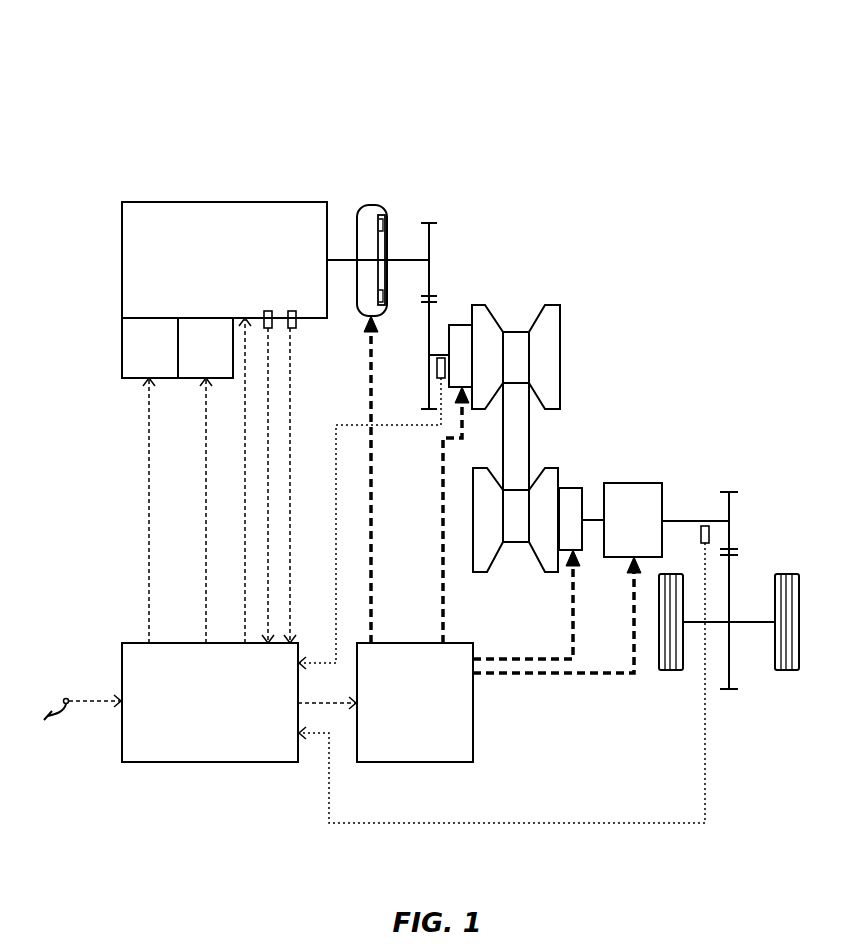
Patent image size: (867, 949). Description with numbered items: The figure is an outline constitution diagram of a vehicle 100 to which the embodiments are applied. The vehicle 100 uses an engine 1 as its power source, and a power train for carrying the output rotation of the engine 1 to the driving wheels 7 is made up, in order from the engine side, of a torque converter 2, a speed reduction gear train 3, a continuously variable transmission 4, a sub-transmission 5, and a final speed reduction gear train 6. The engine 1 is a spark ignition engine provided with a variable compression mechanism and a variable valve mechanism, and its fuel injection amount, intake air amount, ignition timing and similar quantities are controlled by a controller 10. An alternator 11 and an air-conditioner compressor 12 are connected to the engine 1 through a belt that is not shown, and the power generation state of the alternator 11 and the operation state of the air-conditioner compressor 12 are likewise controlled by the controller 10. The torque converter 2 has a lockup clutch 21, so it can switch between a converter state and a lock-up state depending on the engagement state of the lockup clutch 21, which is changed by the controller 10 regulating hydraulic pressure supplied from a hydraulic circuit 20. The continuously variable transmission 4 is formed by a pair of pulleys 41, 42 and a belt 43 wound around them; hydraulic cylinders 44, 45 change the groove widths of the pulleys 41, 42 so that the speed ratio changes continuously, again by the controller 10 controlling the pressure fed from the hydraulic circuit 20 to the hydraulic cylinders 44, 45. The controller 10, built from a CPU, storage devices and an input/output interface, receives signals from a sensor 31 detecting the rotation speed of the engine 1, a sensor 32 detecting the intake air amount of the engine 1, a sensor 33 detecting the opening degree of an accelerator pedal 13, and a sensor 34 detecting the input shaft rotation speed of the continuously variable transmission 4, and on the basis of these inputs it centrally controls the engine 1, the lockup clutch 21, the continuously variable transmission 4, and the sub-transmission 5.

The vehicle 100 is at (614, 145).
The engine 1 is at (287, 212).
The torque converter 2 is at (374, 211).
The lockup clutch 21 is at (385, 215).
The speed reduction gear train 3 is at (431, 258).
The continuously variable transmission 4 is at (592, 306).
The pulley 41 is at (549, 310).
The pulley 42 is at (551, 560).
The belt 43 is at (530, 432).
The hydraulic cylinder 44 is at (458, 324).
The hydraulic cylinder 45 is at (585, 487).
The sub-transmission 5 is at (639, 495).
The final speed reduction gear train 6 is at (732, 510).
The driving wheels 7 is at (666, 675).
The controller 10 is at (209, 757).
The alternator 11 is at (183, 374).
The air-conditioner compressor 12 is at (128, 374).
The accelerator pedal 13 is at (47, 716).
The hydraulic circuit 20 is at (414, 757).
The sensor 31 is at (297, 322).
The sensor 32 is at (272, 321).
The sensor 33 is at (65, 698).
The sensor 34 is at (437, 368).